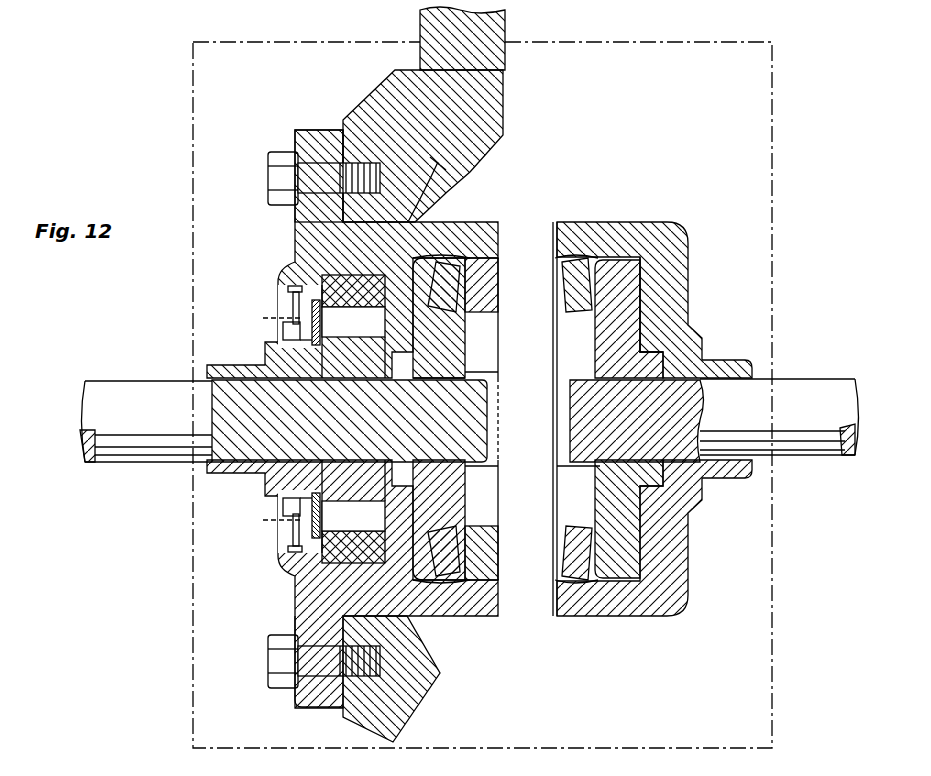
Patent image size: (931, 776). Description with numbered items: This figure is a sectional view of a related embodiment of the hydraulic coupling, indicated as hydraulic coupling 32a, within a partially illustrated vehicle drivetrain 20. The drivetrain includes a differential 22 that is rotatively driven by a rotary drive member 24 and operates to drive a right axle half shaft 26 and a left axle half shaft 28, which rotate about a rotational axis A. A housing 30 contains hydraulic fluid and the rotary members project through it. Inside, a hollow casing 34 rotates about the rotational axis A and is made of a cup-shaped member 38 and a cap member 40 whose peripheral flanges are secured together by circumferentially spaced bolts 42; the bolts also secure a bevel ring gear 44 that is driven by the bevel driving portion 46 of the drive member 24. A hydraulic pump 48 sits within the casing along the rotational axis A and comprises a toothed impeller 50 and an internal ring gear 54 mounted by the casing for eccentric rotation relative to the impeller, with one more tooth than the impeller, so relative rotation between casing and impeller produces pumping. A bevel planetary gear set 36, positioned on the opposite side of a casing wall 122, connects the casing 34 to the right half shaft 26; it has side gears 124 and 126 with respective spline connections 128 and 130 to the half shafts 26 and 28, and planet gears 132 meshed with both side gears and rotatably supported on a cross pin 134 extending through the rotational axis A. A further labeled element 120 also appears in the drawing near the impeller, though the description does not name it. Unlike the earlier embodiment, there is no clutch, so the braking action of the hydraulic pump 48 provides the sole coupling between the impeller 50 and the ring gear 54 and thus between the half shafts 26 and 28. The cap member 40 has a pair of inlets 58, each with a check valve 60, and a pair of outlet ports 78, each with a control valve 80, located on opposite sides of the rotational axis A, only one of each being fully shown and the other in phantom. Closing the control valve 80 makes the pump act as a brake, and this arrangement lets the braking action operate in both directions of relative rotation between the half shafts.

The vehicle drivetrain 20 is at (786, 52).
The differential 22 is at (676, 40).
The rotary drive member 24 is at (427, 33).
The right axle half shaft 26 is at (822, 380).
The left axle half shaft 28 is at (132, 383).
The housing 30 is at (772, 115).
The hydraulic coupling 32a is at (262, 598).
The casing 34 is at (584, 221).
The planetary gear set 36 is at (642, 296).
The cup-shaped member 38 is at (646, 235).
The cap member 40 is at (302, 135).
The bolts 42 is at (282, 180).
The ring gear 44 is at (364, 116).
The bevel driving portion 46 is at (438, 165).
The hydraulic pump 48 is at (284, 566).
The impeller 50 is at (349, 421).
The internal ring gear 54 is at (300, 266).
The inlets 58 is at (291, 302).
The check valve 60 is at (272, 318).
The outlet ports 78 is at (294, 288).
The control valve 80 is at (287, 352).
The splined hub 120 is at (380, 390).
The casing wall 122 is at (448, 500).
The side gear 124 is at (628, 328).
The side gear 126 is at (450, 348).
The spline connection 128 is at (590, 472).
The spline connection 130 is at (462, 468).
The planet gears 132 is at (542, 262).
The cross pin 134 is at (512, 418).
The rotational axis A is at (512, 417).